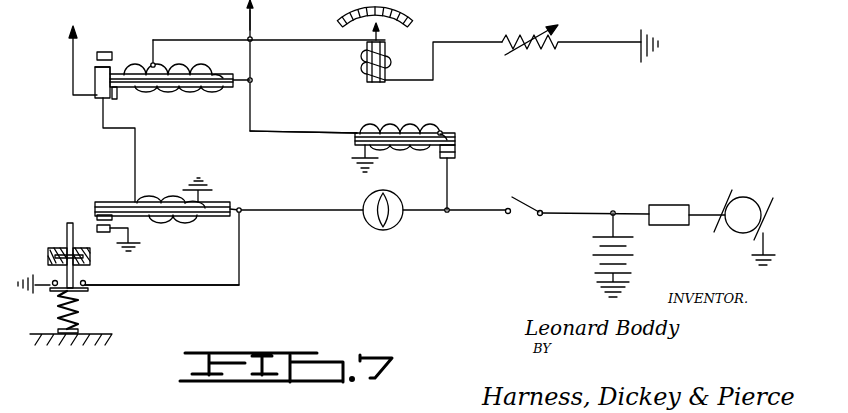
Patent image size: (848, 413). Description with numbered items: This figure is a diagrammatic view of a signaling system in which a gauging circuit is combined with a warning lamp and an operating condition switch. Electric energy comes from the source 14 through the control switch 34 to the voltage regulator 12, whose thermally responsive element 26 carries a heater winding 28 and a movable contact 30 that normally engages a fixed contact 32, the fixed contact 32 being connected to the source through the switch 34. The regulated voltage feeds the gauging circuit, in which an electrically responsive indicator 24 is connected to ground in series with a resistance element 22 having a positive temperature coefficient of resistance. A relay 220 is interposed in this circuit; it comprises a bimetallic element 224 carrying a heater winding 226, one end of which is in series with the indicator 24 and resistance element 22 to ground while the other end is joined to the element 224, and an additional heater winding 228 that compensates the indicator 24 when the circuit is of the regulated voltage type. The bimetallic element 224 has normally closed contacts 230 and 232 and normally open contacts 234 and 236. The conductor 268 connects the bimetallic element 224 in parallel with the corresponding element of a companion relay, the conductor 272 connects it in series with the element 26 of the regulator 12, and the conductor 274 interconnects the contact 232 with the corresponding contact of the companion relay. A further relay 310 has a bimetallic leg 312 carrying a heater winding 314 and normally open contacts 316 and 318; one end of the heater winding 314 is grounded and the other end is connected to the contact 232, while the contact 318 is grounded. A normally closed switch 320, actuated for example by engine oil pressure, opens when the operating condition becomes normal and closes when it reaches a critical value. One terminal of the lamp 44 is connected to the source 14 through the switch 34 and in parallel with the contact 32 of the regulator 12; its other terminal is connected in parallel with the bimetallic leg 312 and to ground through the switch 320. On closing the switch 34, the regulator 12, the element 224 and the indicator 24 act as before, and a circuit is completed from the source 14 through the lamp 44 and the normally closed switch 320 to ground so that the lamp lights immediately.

The voltage regulator 12 is at (377, 129).
The source 14 is at (663, 208).
The resistance element 22 is at (532, 33).
The indicator 24 is at (413, 18).
The thermally responsive element 26 is at (434, 144).
The heater winding 28 is at (440, 130).
The movable contact 30 is at (458, 151).
The fixed contact 32 is at (457, 157).
The control switch 34 is at (543, 205).
The lamp 44 is at (388, 229).
The relay 220 is at (155, 88).
The bimetallic element 224 is at (216, 89).
The heater winding 226 is at (186, 66).
The additional heater winding 228 is at (122, 68).
The normally closed contact 230 is at (114, 91).
The normally closed contact 232 is at (95, 97).
The normally open contact 234 is at (95, 70).
The normally open contact 236 is at (100, 52).
The conductor 268 is at (253, 18).
The conductor 272 is at (280, 131).
The conductor 274 is at (71, 50).
The relay 310 is at (113, 201).
The bimetallic leg 312 is at (147, 201).
The heater winding 314 is at (183, 222).
The normally open contact 316 is at (95, 212).
The normally open contact 318 is at (101, 233).
The normally closed switch 320 is at (92, 291).